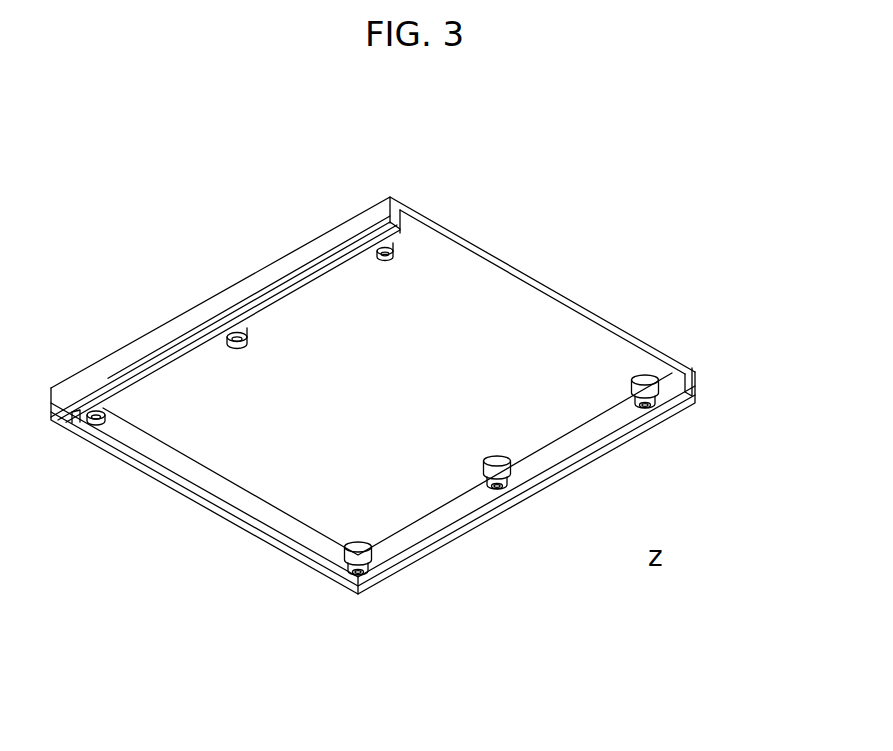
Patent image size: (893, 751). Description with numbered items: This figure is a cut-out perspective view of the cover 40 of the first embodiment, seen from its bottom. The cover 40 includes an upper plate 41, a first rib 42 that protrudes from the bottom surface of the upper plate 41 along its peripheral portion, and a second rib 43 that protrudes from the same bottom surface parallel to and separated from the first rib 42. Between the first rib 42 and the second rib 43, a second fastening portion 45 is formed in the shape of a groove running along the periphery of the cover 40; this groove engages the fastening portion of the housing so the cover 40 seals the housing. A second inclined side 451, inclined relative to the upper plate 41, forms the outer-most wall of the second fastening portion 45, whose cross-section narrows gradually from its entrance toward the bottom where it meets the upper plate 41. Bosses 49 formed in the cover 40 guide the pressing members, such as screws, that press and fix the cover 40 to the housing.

The cover 40 is at (572, 267).
The upper plate 41 is at (650, 357).
The first rib 42 is at (683, 413).
The second rib 43 is at (600, 432).
The second fastening portion 45 is at (666, 410).
The second inclined side 451 is at (688, 390).
The boss 49 is at (508, 482).